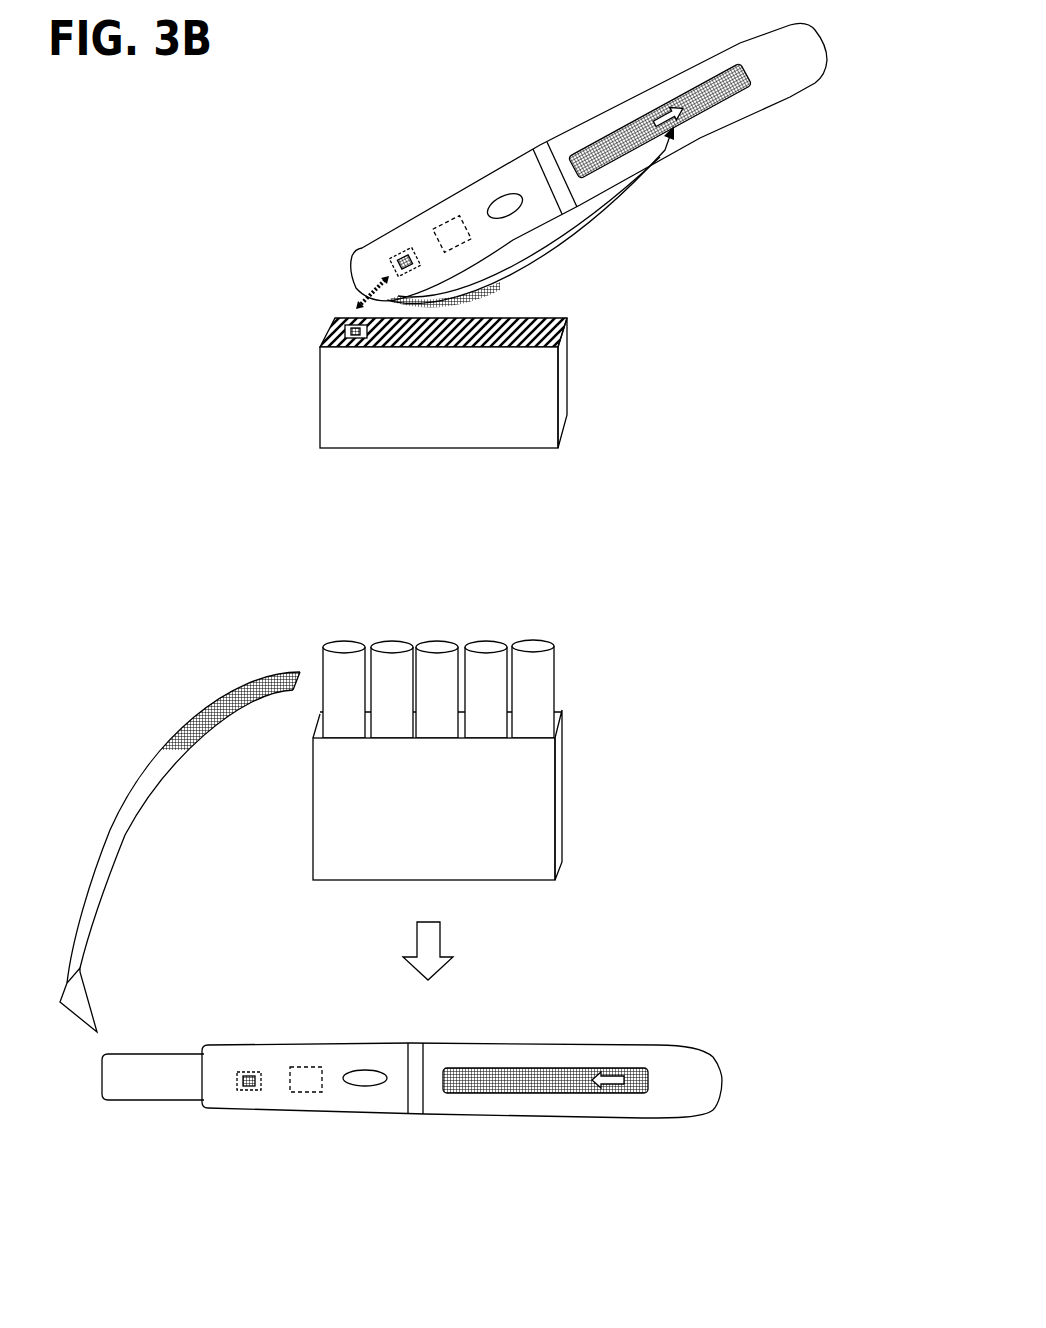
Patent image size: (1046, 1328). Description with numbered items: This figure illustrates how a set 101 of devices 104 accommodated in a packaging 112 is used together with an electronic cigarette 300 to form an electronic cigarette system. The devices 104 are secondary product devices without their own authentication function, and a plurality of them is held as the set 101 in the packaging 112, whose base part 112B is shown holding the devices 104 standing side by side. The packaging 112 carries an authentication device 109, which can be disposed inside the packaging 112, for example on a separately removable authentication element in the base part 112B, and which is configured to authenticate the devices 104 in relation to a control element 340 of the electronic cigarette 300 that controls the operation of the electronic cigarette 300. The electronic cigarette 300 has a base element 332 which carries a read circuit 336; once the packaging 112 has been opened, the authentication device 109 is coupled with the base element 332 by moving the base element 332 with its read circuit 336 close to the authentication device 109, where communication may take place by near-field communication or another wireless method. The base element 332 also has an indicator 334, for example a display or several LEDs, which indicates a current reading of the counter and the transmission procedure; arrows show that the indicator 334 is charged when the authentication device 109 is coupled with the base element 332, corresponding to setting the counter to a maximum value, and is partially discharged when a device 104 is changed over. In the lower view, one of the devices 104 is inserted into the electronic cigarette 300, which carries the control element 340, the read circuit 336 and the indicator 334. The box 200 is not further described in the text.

The electronic cigarette 300 is at (488, 633).
The base element 332 is at (493, 165).
The indicator 334 is at (688, 97).
The read circuit 336 is at (395, 262).
The control element 340 is at (440, 220).
The package box 200 is at (472, 359).
The authentication device 109 is at (345, 322).
The set 101 is at (417, 816).
The second device 104 is at (335, 638).
The packaging 112 is at (417, 816).
The base part 112B is at (417, 816).